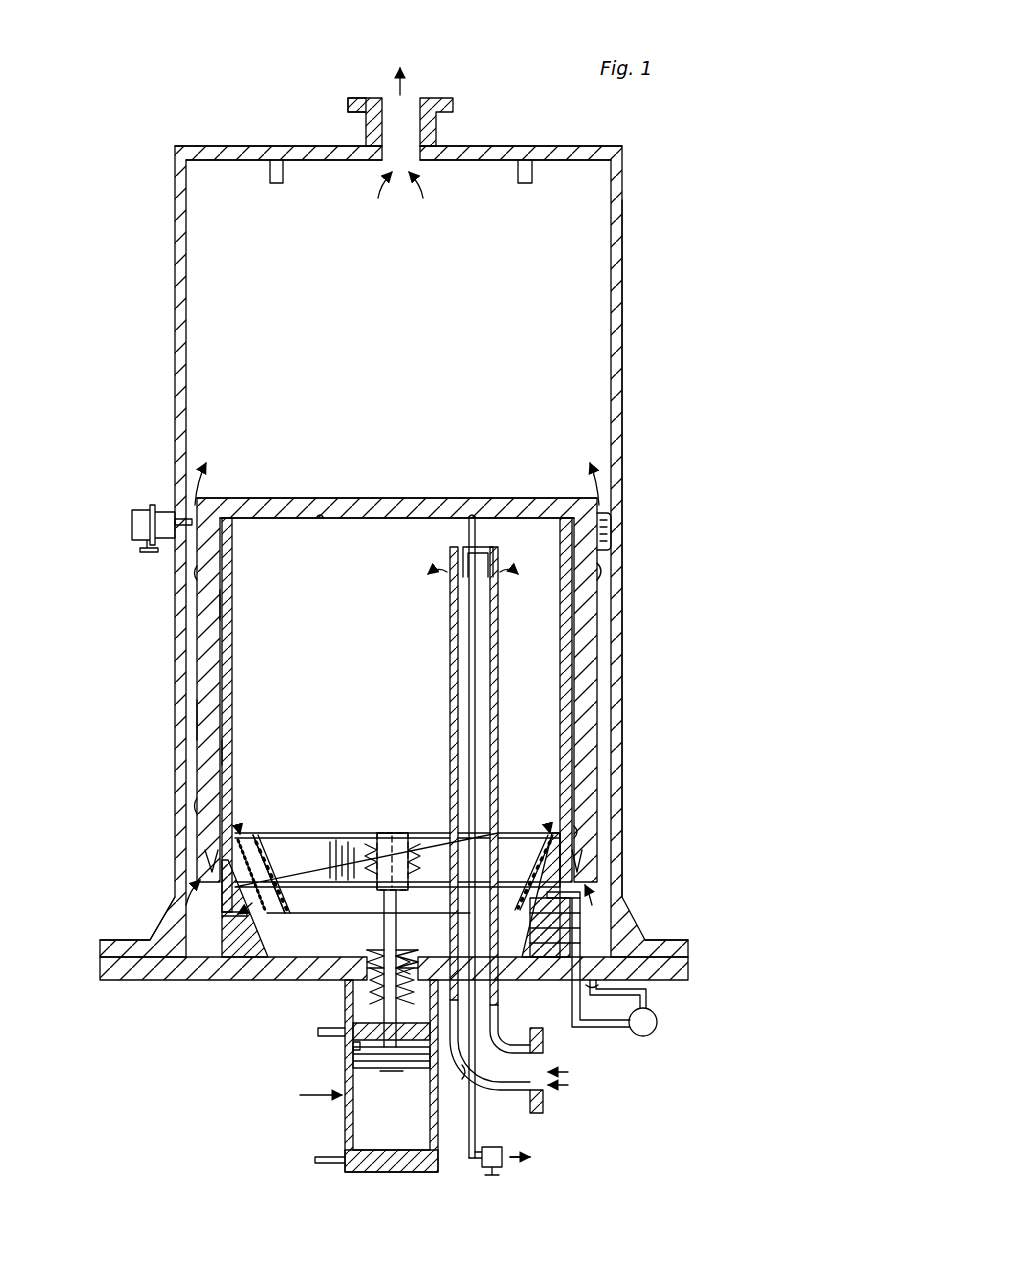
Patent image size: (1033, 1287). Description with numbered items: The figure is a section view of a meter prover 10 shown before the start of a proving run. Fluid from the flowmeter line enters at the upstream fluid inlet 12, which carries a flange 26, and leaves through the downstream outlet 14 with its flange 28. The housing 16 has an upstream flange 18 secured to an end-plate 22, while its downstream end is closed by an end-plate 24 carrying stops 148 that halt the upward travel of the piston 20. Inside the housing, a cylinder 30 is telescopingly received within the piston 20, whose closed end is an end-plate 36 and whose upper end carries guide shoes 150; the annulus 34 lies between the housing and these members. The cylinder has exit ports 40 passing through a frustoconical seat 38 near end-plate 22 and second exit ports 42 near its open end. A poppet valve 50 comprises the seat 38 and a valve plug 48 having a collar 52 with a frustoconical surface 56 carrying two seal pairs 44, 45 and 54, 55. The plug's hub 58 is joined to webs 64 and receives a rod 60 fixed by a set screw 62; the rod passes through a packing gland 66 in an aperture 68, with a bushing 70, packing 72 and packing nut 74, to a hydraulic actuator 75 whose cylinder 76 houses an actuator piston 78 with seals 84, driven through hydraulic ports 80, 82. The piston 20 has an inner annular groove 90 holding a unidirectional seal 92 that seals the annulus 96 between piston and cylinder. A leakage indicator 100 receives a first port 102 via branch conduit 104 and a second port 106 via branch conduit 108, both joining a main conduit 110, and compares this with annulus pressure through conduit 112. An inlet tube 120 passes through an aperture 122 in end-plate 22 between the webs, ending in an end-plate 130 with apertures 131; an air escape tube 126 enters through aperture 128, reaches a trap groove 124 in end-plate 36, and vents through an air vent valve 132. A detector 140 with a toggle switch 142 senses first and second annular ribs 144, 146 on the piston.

The meter prover 10 is at (630, 276).
The upstream fluid inlet 12 is at (556, 1078).
The downstream outlet 14 is at (427, 97).
The housing 16 is at (176, 190).
The upstream flange 18 is at (105, 946).
The piston 20 is at (195, 708).
The end-plate 22 is at (100, 968).
The end-plate 24 is at (218, 146).
The flange 26 is at (544, 1100).
The flange 28 is at (348, 105).
The cylinder 30 is at (225, 680).
The annulus 34 is at (195, 733).
The end-plate 36 is at (385, 498).
The frustoconical seat 38 is at (268, 950).
The exit ports 40 is at (228, 925).
The second exit ports 42 is at (222, 605).
The resilient seal 44 is at (242, 850).
The resilient seal 45 is at (250, 868).
The valve plug 48 is at (332, 833).
The poppet valve 50 is at (512, 833).
The collar 52 is at (540, 845).
The resilient seal 54 is at (275, 892).
The resilient seal 55 is at (290, 913).
The frustoconical surface 56 is at (262, 878).
The hub 58 is at (390, 833).
The rod 60 is at (398, 910).
The set screw 62 is at (415, 848).
The webs 64 is at (316, 870).
The packing gland 66 is at (352, 990).
The aperture 68 is at (410, 960).
The bushing 70 is at (375, 954).
The packing 72 is at (370, 962).
The packing nut 74 is at (352, 1010).
The hydraulic actuator 75 is at (354, 1076).
The cylinder 76 is at (390, 1172).
The actuator piston 78 is at (401, 1070).
The hydraulic port 80 is at (330, 1032).
The hydraulic port 82 is at (325, 1158).
The seals 84 is at (352, 1046).
The inner annular groove 90 is at (580, 832).
The unidirectional seal 92 is at (570, 856).
The annulus 96 is at (228, 752).
The leakage indicator 100 is at (660, 1026).
The first port 102 is at (560, 892).
The branch conduit 104 is at (580, 915).
The second port 106 is at (552, 960).
The branch conduit 108 is at (565, 945).
The main conduit 110 is at (592, 1030).
The conduit 112 is at (648, 997).
The inlet tube 120 is at (447, 620).
The aperture 122 is at (488, 985).
The trap groove 124 is at (320, 512).
The air escape tube 126 is at (468, 512).
The aperture 128 is at (477, 1075).
The end-plate 130 is at (466, 545).
The apertures 131 is at (494, 561).
The air vent valve 132 is at (488, 1168).
The detector 140 is at (134, 514).
The toggle switch 142 is at (182, 515).
The first annular rib 144 is at (197, 573).
The second annular rib 146 is at (198, 805).
The stops 148 is at (525, 184).
The guide shoes 150 is at (612, 541).